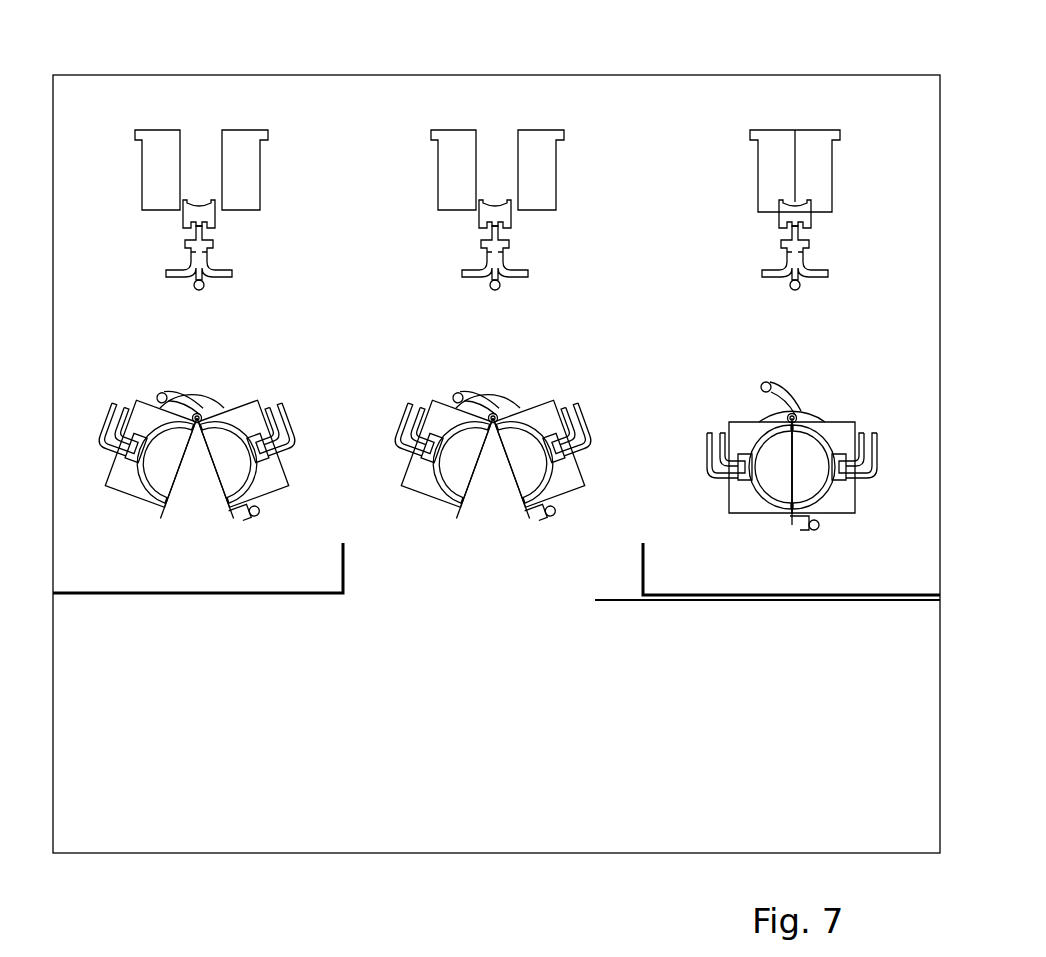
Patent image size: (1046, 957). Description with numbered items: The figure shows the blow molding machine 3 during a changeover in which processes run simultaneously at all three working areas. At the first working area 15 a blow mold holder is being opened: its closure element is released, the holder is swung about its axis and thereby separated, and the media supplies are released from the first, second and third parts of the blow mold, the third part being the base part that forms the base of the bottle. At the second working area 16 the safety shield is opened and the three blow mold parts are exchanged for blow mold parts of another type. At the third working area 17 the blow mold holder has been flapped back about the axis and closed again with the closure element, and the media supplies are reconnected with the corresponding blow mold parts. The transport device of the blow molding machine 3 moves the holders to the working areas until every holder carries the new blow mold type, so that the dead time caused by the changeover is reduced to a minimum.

The blow molding machine 3 is at (580, 75).
The first working area 15 is at (203, 637).
The second working area 16 is at (472, 628).
The third working area 17 is at (780, 645).